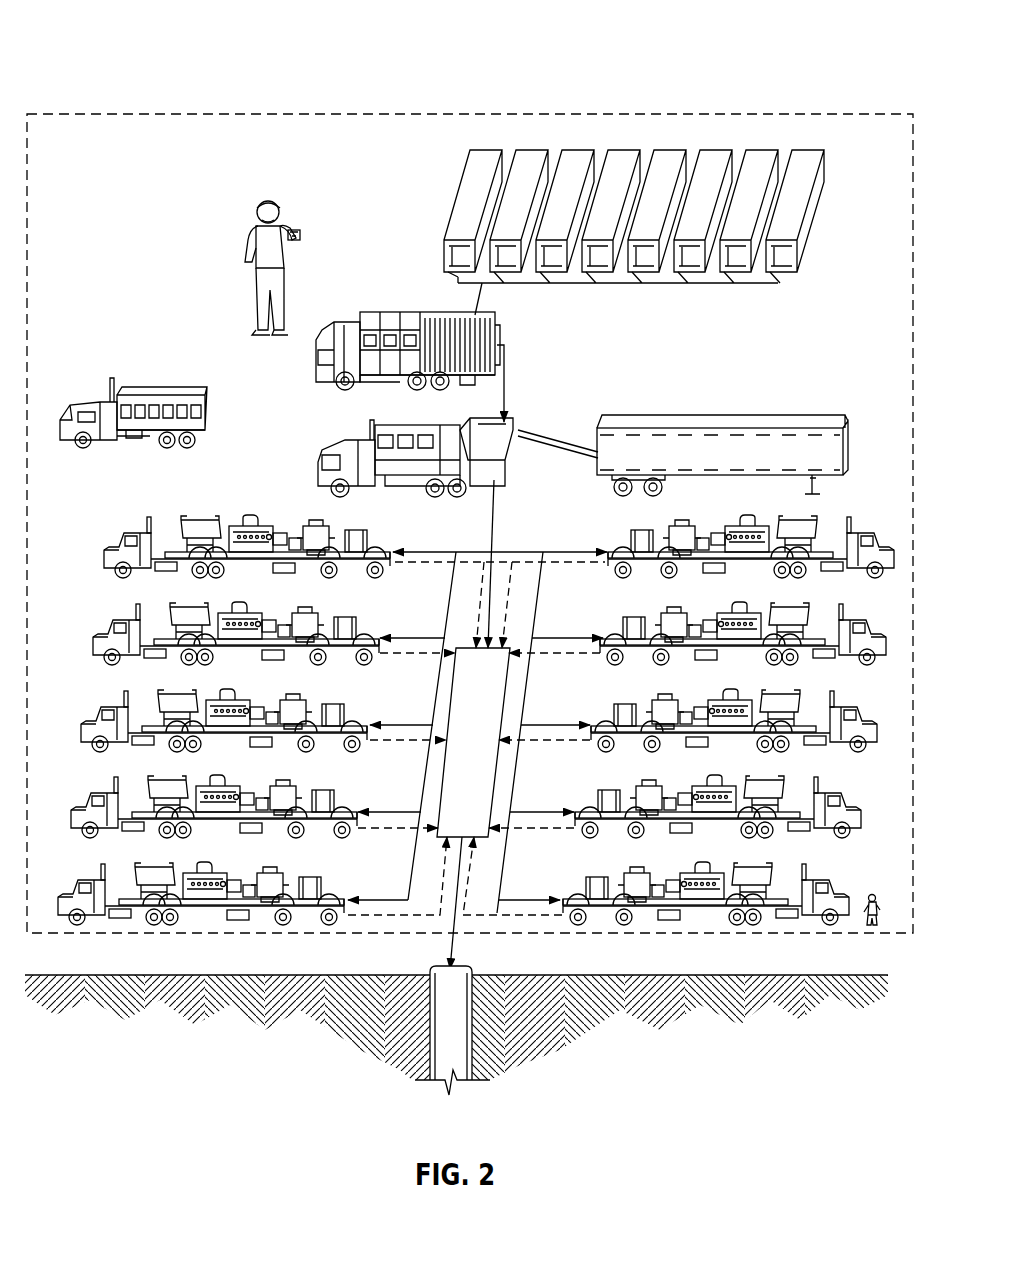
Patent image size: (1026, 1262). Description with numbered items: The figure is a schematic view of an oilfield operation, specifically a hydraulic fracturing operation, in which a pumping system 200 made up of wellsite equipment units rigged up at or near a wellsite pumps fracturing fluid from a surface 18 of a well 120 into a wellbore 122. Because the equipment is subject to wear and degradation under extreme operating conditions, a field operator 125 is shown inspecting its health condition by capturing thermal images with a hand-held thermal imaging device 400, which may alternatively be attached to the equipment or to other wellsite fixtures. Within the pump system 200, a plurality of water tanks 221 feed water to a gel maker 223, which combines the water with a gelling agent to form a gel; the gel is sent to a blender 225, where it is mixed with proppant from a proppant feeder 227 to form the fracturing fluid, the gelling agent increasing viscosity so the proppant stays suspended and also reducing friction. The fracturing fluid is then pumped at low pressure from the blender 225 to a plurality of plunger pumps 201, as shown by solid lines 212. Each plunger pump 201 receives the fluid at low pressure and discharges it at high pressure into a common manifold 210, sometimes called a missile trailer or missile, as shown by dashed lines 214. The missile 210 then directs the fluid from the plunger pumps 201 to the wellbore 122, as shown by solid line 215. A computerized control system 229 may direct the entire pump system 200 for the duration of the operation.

The pumping system 200 is at (107, 37).
The water tanks 221 is at (485, 150).
The field operator 125 is at (249, 226).
The thermal imaging device 400 is at (296, 229).
The computerized control system 229 is at (183, 387).
The gel maker 223 is at (498, 340).
The blender 225 is at (370, 438).
The proppant feeder 227 is at (724, 414).
The plunger pumps 201 is at (723, 520).
The solid lines 212 is at (499, 514).
The dashed lines 214 is at (443, 566).
The common manifold 210 is at (463, 706).
The solid line 215 is at (446, 941).
The surface 18 is at (185, 974).
The well 120 is at (468, 1052).
The wellbore 122 is at (445, 1052).